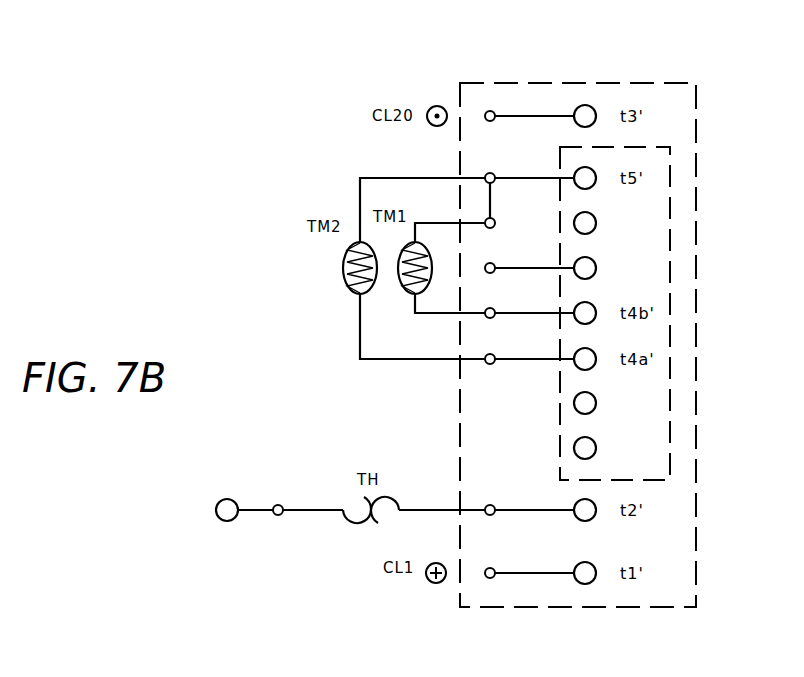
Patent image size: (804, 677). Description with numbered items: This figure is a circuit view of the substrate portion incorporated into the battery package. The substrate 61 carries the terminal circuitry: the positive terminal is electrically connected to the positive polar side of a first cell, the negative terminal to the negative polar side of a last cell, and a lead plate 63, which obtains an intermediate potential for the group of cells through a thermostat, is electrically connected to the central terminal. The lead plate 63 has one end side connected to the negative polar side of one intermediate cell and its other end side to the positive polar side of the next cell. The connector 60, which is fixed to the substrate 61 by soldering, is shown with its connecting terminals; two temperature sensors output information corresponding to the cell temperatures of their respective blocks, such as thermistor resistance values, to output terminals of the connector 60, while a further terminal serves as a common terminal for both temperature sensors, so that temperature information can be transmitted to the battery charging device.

The connector 60 is at (667, 143).
The substrate 61 is at (588, 83).
The lead plate 63 is at (227, 499).